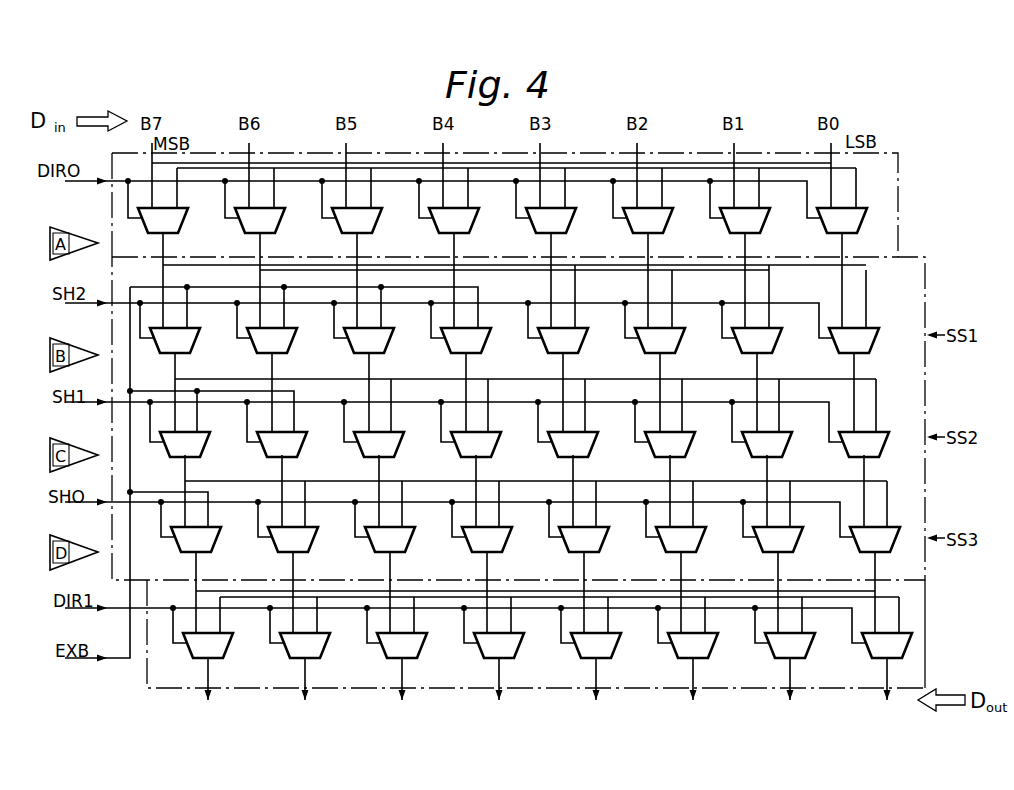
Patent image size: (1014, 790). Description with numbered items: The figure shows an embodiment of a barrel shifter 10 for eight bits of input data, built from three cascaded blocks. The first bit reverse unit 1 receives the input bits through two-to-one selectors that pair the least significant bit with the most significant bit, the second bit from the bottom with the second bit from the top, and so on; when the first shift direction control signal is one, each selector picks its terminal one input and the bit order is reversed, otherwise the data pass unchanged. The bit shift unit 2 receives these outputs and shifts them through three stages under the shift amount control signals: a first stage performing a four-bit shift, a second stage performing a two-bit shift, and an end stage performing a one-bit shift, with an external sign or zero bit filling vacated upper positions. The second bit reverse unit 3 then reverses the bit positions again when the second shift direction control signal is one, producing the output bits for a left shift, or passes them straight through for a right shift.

The barrel shifter circuit 10 is at (519, 422).
The first bit reverse unit 1 is at (902, 178).
The bit shift unit 2 is at (913, 250).
The second bit reverse unit 3 is at (927, 642).